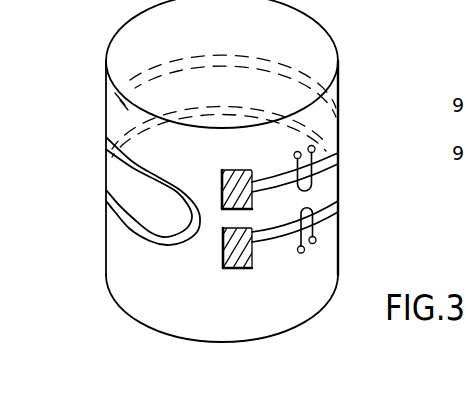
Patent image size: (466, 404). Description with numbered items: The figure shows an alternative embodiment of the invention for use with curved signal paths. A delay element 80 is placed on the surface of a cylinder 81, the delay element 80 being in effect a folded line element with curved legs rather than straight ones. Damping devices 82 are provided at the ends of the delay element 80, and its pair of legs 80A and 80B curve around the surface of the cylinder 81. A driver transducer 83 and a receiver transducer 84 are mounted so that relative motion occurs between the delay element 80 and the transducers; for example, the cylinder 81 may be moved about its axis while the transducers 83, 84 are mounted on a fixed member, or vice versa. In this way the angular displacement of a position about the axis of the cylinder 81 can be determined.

The delay element 80 is at (116, 231).
The leg 80A is at (266, 181).
The leg 80B is at (280, 247).
The cylinder 81 is at (112, 266).
The damping device 82 is at (222, 168).
The driver transducer 83 is at (318, 186).
The receiver transducer 84 is at (320, 238).